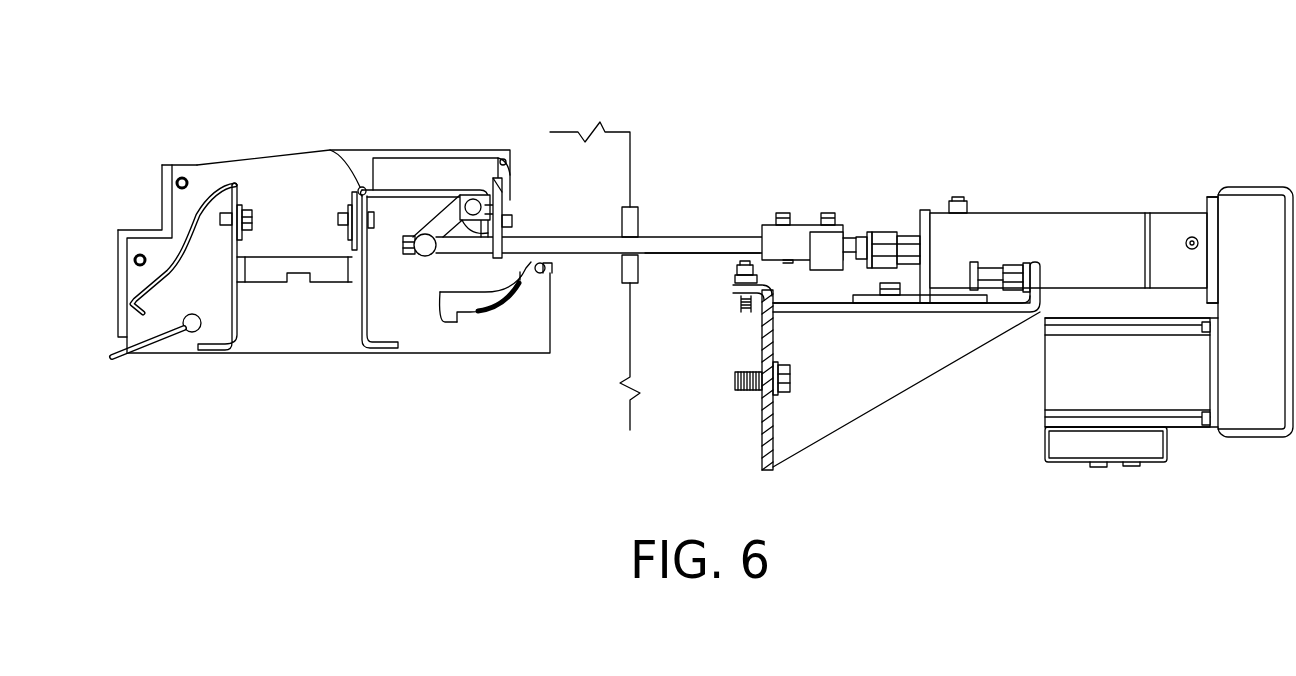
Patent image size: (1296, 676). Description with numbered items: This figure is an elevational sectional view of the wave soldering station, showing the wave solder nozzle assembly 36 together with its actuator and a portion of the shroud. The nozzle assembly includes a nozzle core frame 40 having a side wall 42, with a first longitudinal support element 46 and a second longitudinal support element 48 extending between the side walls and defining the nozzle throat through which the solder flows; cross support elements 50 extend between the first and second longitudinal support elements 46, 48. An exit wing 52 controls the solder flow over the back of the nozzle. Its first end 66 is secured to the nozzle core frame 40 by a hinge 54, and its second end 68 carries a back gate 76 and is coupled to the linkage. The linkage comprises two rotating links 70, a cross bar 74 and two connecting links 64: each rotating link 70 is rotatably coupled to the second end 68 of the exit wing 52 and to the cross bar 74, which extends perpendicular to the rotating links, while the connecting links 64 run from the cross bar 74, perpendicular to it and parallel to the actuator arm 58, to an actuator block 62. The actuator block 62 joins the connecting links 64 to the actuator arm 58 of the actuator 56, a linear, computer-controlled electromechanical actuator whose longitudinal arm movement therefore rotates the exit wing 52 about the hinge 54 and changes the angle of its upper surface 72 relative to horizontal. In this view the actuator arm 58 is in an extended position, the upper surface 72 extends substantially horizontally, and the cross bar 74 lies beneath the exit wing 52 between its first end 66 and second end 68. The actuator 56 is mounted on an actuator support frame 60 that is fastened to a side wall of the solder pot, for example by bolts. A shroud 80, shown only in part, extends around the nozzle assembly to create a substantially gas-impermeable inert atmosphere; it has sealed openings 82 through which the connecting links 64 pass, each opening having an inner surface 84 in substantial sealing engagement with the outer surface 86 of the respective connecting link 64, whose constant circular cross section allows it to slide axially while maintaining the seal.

The wave solder nozzle assembly 36 is at (213, 150).
The nozzle core frame 40 is at (200, 178).
The side wall 42 is at (271, 172).
The first longitudinal support element 46 is at (215, 352).
The second longitudinal support element 48 is at (385, 350).
The cross support element 50 is at (271, 275).
The exit wing 52 is at (439, 193).
The hinge 54 is at (355, 186).
The actuator 56 is at (1088, 235).
The actuator arm 58 is at (906, 238).
The actuator support frame 60 is at (845, 390).
The actuator block 62 is at (823, 247).
The connecting link 64 is at (650, 256).
The first end of exit wing 66 is at (372, 192).
The second end of exit wing 68 is at (507, 150).
The rotating link 70 is at (458, 196).
The upper surface of exit wing 72 is at (428, 190).
The cross bar 74 is at (418, 257).
The back gate 76 is at (503, 227).
The shroud 80 is at (631, 155).
The sealed opening 82 is at (640, 233).
The inner surface of sealed opening 84 is at (623, 257).
The outer surface of connecting link 86 is at (692, 256).